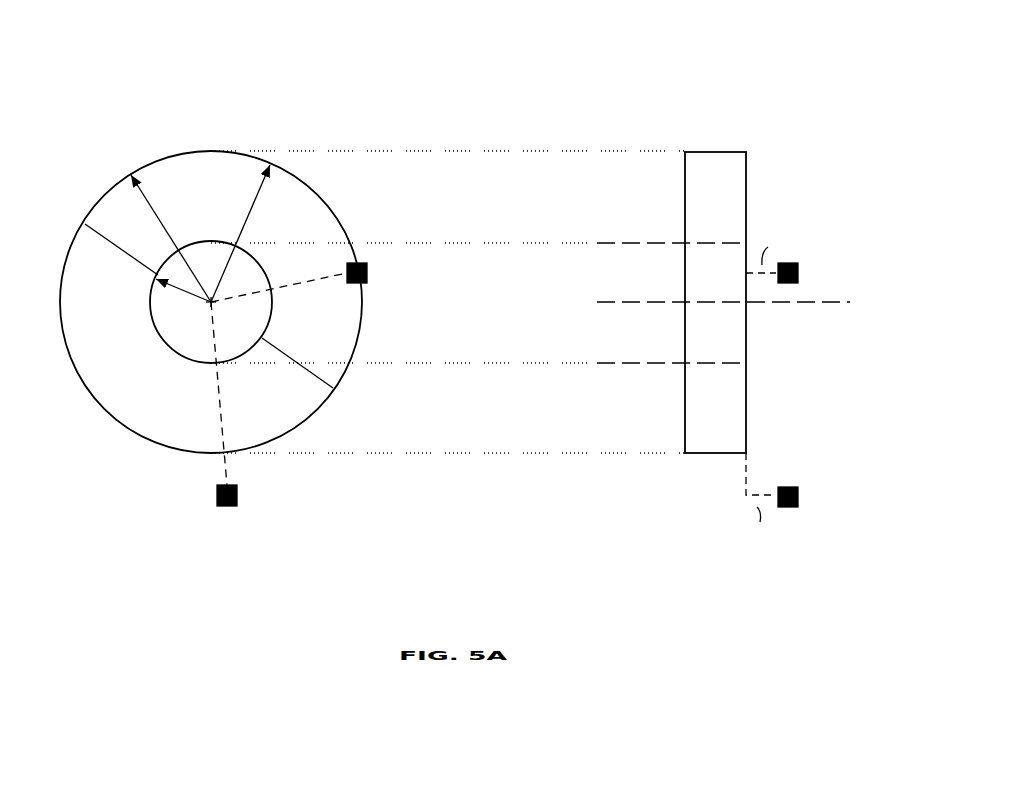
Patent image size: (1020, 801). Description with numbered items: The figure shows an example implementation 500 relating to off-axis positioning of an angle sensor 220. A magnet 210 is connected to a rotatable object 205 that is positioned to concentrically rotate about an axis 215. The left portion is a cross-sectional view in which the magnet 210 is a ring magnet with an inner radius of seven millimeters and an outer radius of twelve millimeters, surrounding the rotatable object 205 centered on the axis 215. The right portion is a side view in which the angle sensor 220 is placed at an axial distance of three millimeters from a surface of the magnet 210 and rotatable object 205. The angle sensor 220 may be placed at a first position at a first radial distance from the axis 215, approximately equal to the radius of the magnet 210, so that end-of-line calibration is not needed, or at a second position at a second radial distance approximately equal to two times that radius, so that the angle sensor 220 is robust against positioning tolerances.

The example implementation 500 is at (100, 33).
The magnet 210 is at (715, 150).
The rotatable object 205 is at (189, 358).
The axis 215 is at (544, 312).
The angle sensor 220 is at (533, 394).